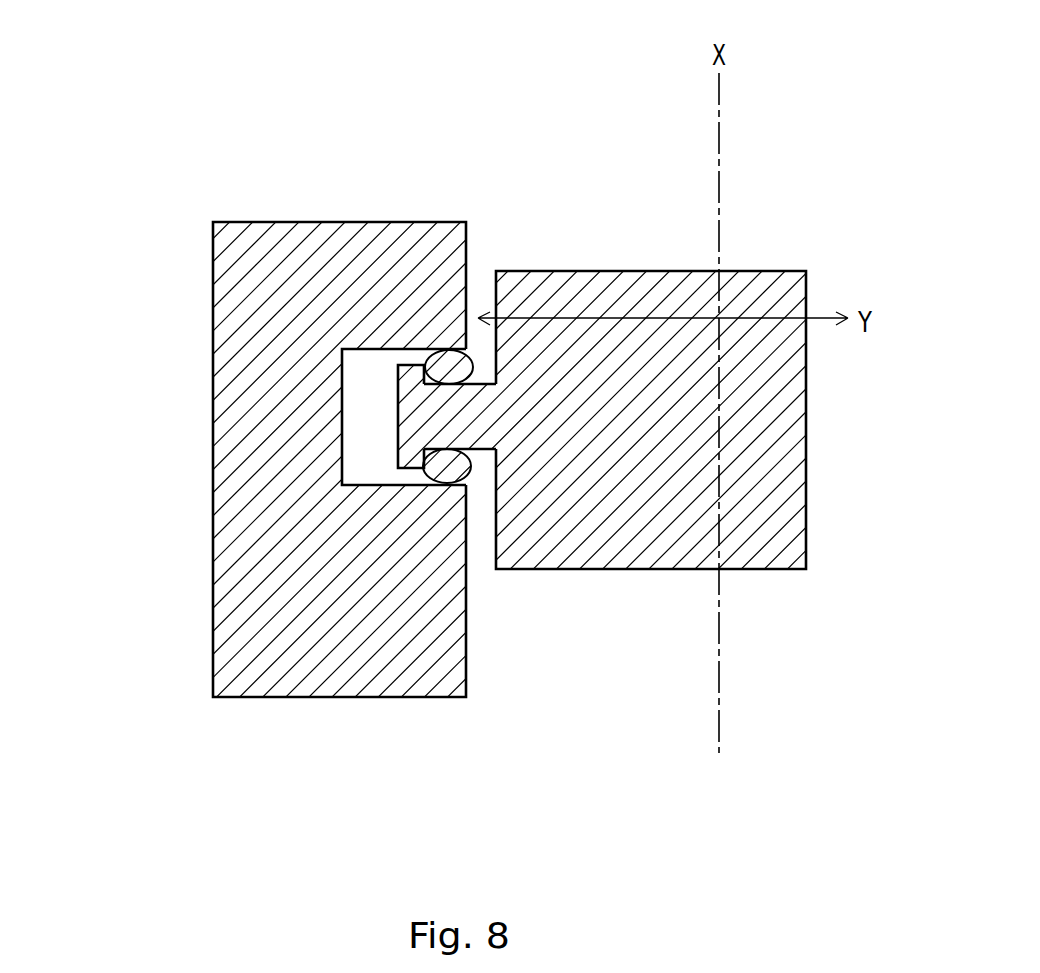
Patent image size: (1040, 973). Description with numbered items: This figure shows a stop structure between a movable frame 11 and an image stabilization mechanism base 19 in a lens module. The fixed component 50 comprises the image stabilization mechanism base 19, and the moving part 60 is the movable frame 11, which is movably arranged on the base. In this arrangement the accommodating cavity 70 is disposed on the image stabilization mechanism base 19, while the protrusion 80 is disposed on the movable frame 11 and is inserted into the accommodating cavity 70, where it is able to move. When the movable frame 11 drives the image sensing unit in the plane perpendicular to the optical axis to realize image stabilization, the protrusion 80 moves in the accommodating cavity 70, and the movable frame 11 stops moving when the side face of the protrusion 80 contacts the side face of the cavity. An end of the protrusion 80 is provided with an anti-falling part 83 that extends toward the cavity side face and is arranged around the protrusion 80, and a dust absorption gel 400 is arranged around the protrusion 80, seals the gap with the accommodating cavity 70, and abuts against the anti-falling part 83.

The movable frame 11 is at (785, 520).
The image stabilization mechanism base 19 is at (310, 265).
The fixed component 50 is at (476, 366).
The moving part 60 is at (520, 499).
The accommodating cavity 70 is at (358, 393).
The protrusion 80 is at (269, 595).
The anti-falling part 83 is at (408, 455).
The dust absorption gel 400 is at (455, 468).